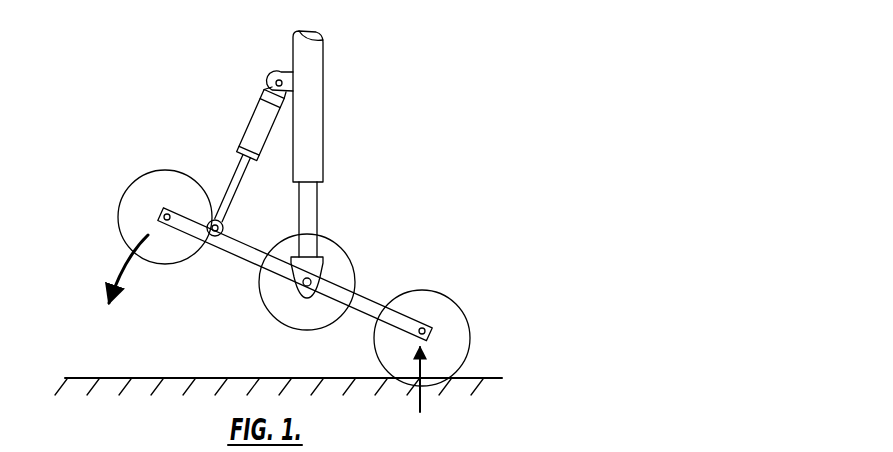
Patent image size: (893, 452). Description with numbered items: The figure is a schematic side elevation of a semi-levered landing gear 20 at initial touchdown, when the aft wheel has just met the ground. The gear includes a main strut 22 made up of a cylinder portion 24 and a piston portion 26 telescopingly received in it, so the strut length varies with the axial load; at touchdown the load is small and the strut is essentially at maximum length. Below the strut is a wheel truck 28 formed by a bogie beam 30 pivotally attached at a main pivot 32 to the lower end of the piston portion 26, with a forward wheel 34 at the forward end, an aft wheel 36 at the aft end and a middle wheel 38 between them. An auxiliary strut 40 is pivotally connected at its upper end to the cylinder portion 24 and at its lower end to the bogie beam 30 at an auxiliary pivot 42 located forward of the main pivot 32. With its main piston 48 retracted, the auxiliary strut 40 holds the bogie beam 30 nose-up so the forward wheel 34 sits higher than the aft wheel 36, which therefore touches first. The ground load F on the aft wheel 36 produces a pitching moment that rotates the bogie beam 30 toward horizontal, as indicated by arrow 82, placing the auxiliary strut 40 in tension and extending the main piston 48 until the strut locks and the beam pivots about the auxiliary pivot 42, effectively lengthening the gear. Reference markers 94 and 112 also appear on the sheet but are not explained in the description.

The semi-levered landing gear 20 is at (464, 127).
The main strut 22 is at (325, 106).
The cylinder portion 24 is at (305, 136).
The piston portion 26 is at (307, 200).
The wheel truck 28 is at (97, 232).
The bogie beam 30 is at (363, 300).
The main pivot 32 is at (323, 278).
The forward wheel 34 is at (132, 193).
The aft wheel 36 is at (448, 325).
The middle wheel 38 is at (272, 302).
The auxiliary strut 40 is at (229, 134).
The auxiliary pivot 42 is at (206, 244).
The main piston 48 is at (230, 195).
The arrow 82 is at (118, 268).
The ground 94 is at (60, 451).
The reference line 112 is at (596, 451).
The ground load F is at (429, 385).